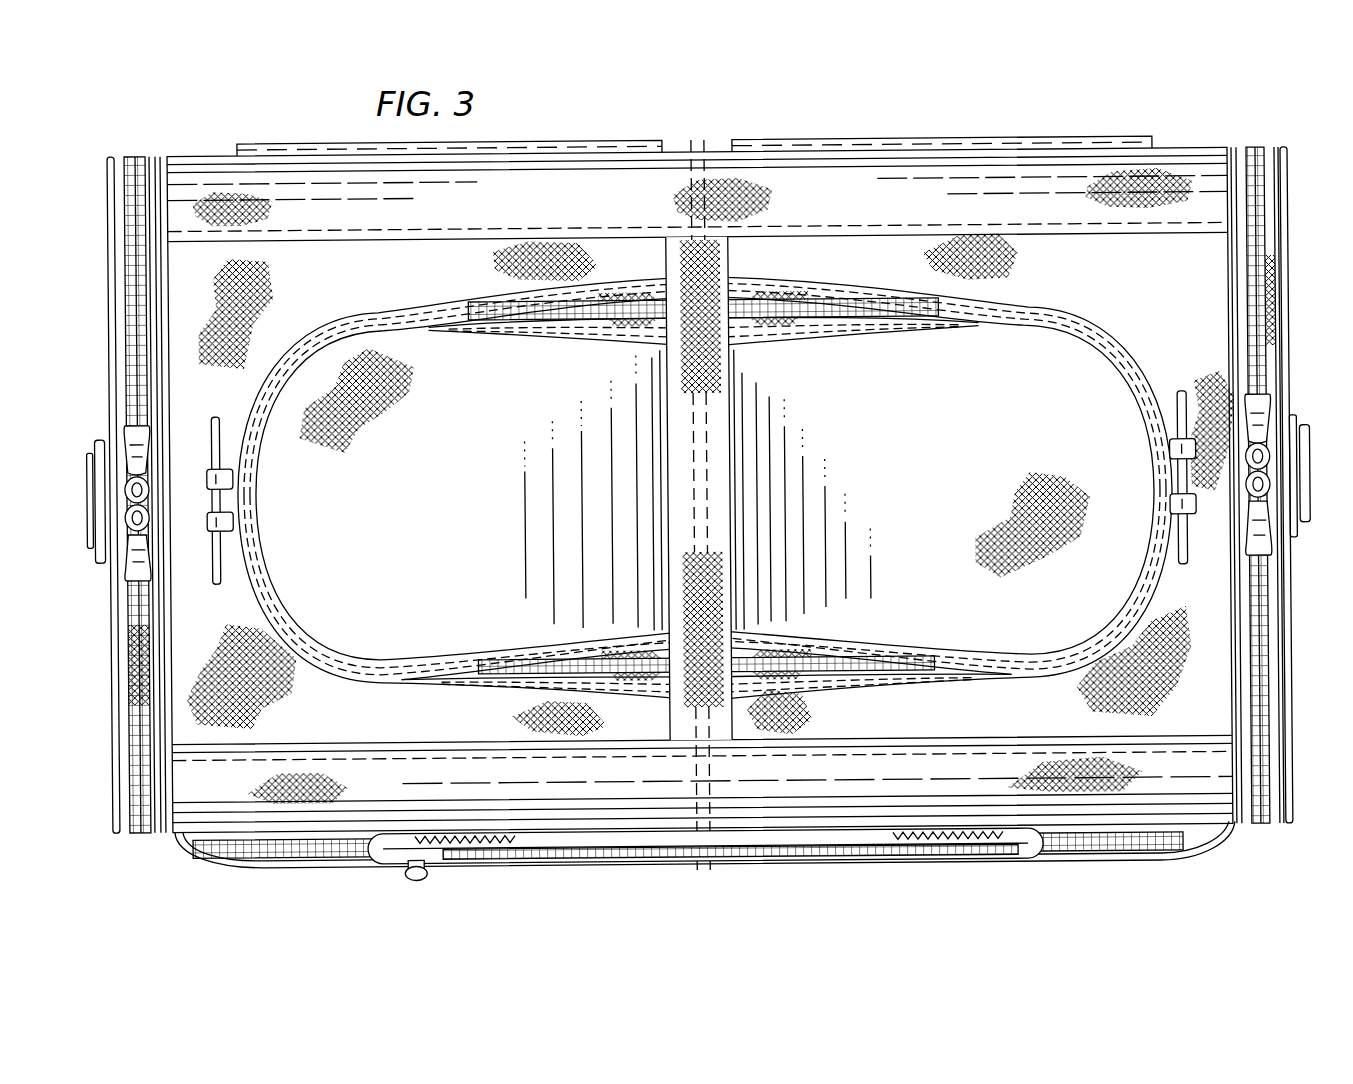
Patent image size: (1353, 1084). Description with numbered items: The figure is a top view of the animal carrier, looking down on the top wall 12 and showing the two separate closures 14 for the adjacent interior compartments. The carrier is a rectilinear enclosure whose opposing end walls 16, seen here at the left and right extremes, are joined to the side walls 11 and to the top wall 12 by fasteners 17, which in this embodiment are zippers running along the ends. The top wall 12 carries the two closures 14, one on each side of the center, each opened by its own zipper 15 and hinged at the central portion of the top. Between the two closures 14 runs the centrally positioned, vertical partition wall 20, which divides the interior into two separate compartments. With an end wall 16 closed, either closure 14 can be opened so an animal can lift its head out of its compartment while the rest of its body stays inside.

The side wall 11 is at (1173, 812).
The top wall 12 is at (318, 710).
The closure 14 is at (428, 508).
The zipper 15 is at (210, 450).
The end wall 16 is at (127, 158).
The fastener 17 is at (138, 160).
The partition wall 20 is at (703, 140).